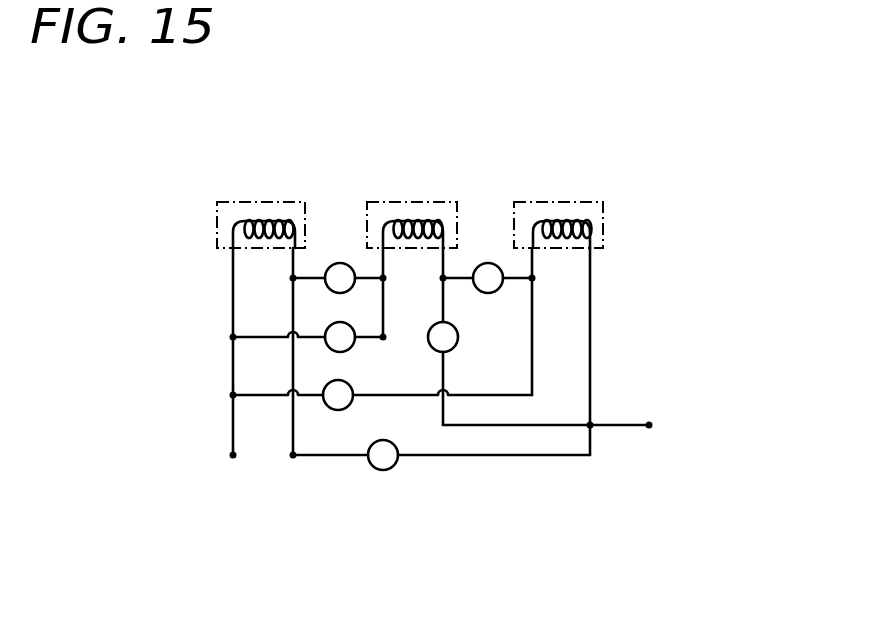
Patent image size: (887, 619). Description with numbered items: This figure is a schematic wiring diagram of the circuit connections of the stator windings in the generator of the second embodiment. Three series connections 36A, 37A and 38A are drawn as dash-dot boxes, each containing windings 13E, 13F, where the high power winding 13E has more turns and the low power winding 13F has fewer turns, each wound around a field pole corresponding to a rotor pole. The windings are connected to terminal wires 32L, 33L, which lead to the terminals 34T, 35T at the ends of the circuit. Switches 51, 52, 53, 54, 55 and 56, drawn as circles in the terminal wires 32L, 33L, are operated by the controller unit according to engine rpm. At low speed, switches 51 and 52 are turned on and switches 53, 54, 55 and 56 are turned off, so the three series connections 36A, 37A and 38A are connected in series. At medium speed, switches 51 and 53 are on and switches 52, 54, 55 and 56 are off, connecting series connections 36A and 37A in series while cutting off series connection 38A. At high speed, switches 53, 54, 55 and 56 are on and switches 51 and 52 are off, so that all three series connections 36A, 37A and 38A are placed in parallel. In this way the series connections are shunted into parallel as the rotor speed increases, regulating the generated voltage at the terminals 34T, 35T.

The high power winding 13E is at (447, 187).
The low power winding 13F is at (268, 222).
The series connection 36A is at (227, 202).
The series connection 37A is at (384, 202).
The series connection 38A is at (535, 202).
The terminal wire 32L is at (412, 351).
The terminal wire 33L is at (383, 303).
The terminal 34T is at (459, 450).
The terminal 35T is at (230, 458).
The switch 51 is at (340, 263).
The switch 52 is at (489, 263).
The switch 53 is at (350, 348).
The switch 54 is at (458, 337).
The switch 55 is at (338, 410).
The switch 56 is at (381, 470).